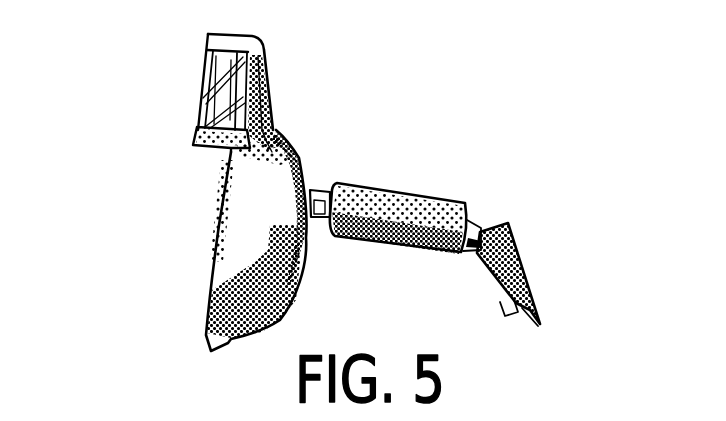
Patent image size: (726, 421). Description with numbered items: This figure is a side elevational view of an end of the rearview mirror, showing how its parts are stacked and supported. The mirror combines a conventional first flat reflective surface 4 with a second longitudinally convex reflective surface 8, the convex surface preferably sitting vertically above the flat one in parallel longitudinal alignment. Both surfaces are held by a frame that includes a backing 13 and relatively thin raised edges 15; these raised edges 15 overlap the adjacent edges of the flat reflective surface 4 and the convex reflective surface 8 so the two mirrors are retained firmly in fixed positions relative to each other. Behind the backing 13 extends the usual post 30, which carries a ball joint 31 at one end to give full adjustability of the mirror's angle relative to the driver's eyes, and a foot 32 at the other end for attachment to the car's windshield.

The first flat reflective surface 4 is at (218, 236).
The second longitudinally convex reflective surface 8 is at (197, 97).
The backing 13 is at (267, 236).
The raised edges 15 is at (193, 133).
The post 30 is at (398, 190).
The ball joint 31 is at (306, 171).
The foot 32 is at (503, 255).